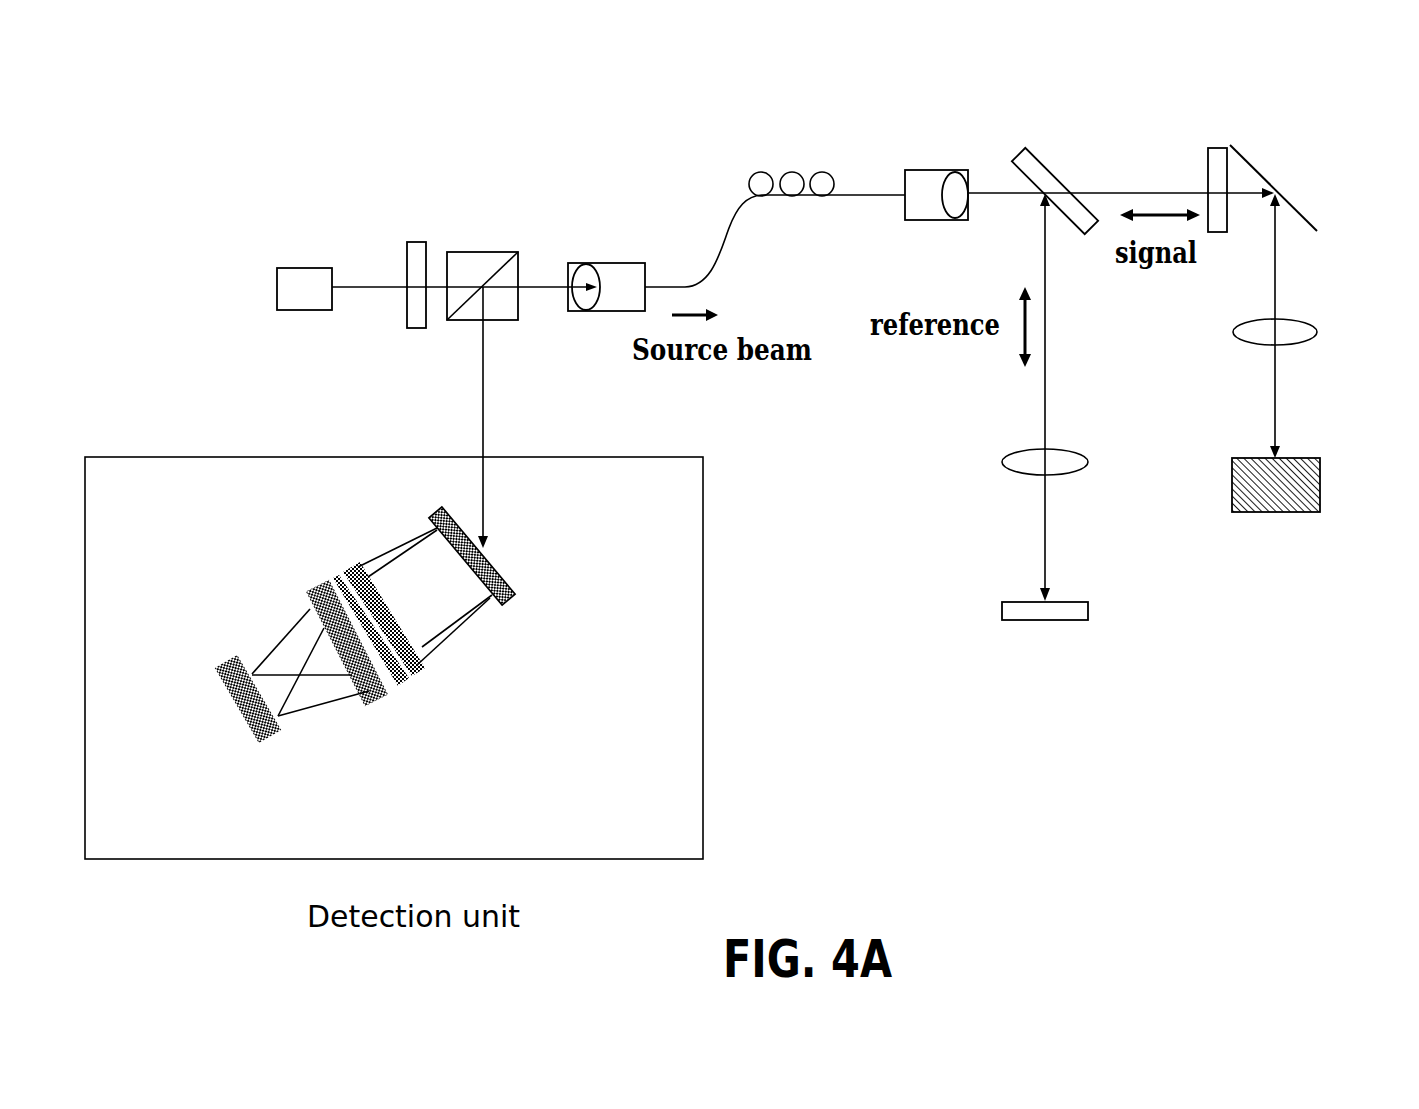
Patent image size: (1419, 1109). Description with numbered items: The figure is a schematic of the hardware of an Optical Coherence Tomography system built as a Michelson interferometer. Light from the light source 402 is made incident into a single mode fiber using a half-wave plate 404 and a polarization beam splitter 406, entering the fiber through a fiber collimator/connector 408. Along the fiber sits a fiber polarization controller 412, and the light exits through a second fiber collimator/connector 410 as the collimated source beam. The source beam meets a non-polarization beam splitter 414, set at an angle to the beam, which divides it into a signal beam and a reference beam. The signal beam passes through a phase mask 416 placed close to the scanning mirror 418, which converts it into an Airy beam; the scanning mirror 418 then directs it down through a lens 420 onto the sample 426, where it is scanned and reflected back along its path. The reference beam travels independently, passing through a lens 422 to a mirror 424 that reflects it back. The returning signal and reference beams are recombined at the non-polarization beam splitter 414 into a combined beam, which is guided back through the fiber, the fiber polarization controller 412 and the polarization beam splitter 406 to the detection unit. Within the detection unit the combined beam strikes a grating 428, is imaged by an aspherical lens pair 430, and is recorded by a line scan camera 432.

The light source 402 is at (303, 313).
The half-wave plate 404 is at (407, 328).
The polarization beam splitter 406 is at (520, 323).
The fiber collimator/connector 408 is at (593, 317).
The fiber collimator/connector 410 is at (927, 168).
The fiber polarization controller 412 is at (778, 161).
The non-polarization beam splitter 414 is at (1050, 166).
The phase mask 416 is at (1196, 167).
The scanning mirror 418 is at (1313, 216).
The lens 420 is at (1302, 307).
The lens 422 is at (1078, 452).
The mirror 424 is at (1033, 622).
The sample 426 is at (1278, 513).
The grating 428 is at (511, 574).
The aspherical lens pair 430 is at (393, 687).
The line scan camera 432 is at (222, 705).